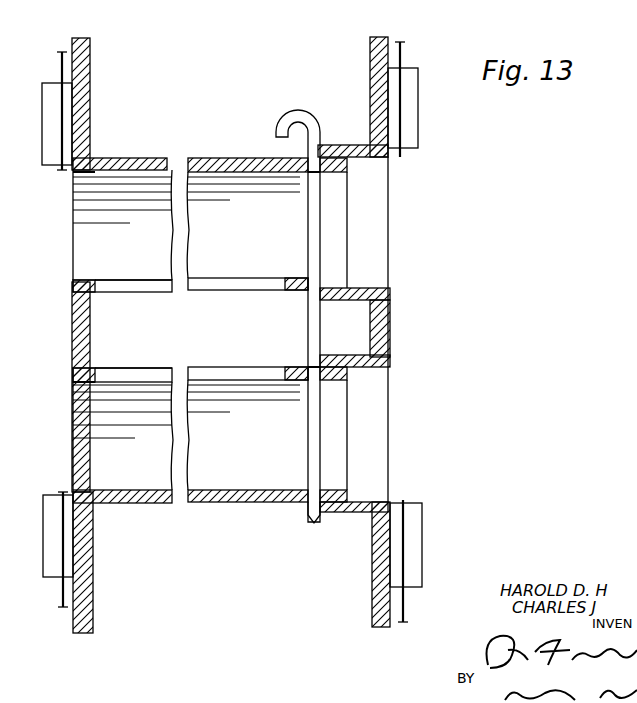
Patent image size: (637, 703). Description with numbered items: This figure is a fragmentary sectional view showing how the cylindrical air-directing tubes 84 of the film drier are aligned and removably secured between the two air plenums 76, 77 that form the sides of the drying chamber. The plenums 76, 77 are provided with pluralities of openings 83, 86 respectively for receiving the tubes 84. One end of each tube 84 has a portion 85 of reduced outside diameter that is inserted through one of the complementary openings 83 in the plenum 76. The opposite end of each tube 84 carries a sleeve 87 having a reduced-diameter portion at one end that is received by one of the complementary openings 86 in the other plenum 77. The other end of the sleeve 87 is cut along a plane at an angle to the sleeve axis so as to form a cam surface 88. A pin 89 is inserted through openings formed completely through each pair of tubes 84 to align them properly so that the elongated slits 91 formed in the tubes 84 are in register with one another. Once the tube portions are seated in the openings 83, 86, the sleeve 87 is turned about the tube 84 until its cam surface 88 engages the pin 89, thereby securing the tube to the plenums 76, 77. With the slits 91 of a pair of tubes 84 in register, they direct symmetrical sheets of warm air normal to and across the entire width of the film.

The air plenum 76 is at (88, 62).
The air plenum 77 is at (385, 38).
The opening 83 is at (76, 284).
The air-directing tube 84 is at (148, 165).
The portion of reduced outside diameter 85 is at (80, 173).
The opening 86 is at (380, 158).
The sleeve 87 is at (334, 147).
The cam surface 88 is at (308, 180).
The pin 89 is at (300, 112).
The elongated slit 91 is at (220, 375).